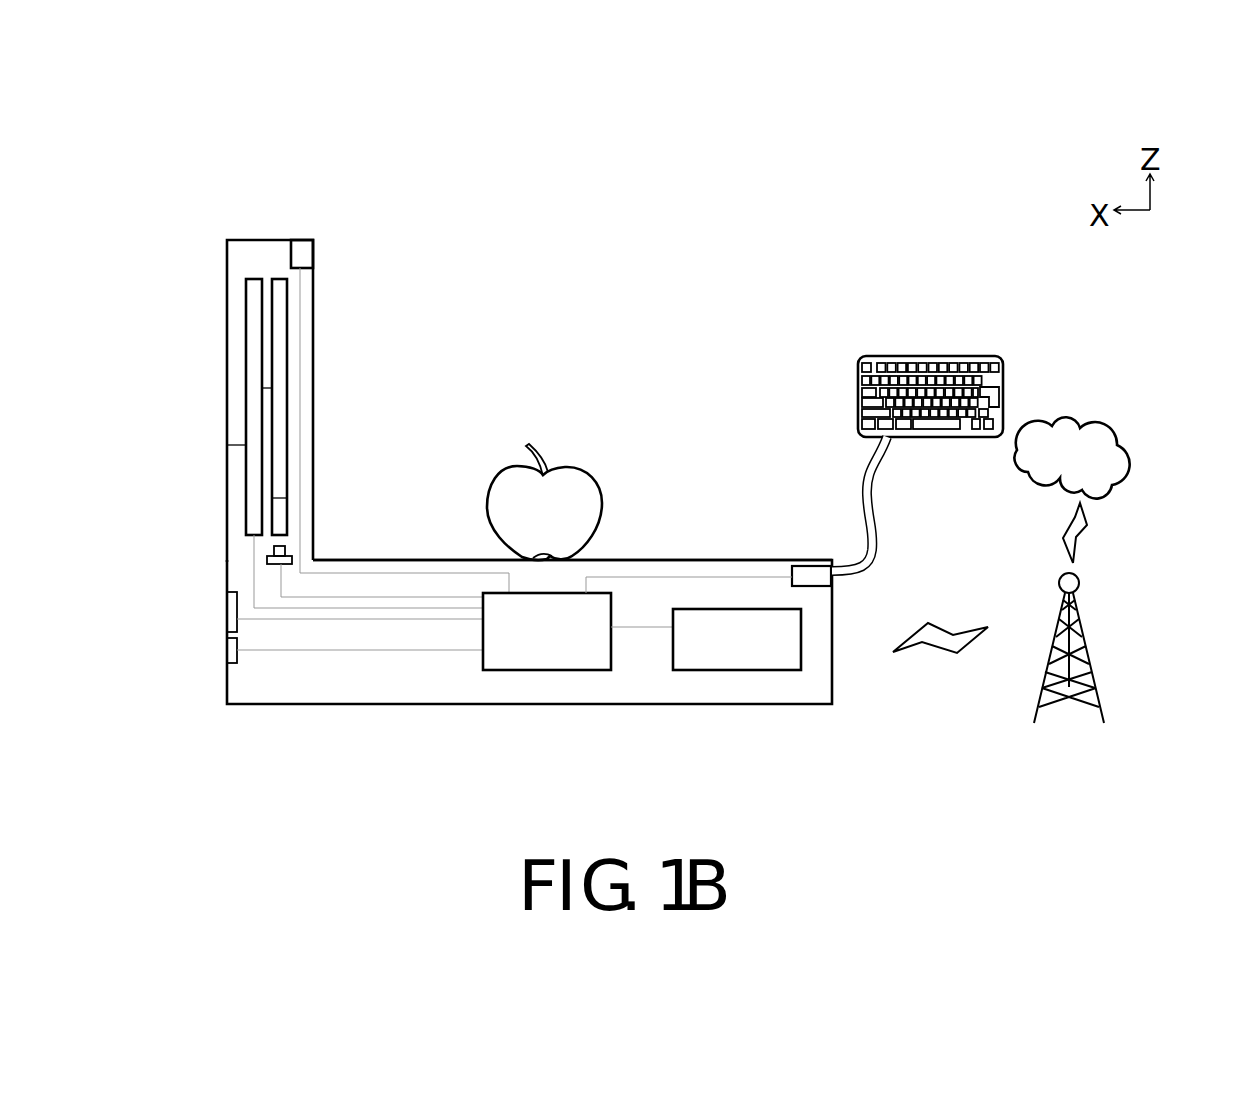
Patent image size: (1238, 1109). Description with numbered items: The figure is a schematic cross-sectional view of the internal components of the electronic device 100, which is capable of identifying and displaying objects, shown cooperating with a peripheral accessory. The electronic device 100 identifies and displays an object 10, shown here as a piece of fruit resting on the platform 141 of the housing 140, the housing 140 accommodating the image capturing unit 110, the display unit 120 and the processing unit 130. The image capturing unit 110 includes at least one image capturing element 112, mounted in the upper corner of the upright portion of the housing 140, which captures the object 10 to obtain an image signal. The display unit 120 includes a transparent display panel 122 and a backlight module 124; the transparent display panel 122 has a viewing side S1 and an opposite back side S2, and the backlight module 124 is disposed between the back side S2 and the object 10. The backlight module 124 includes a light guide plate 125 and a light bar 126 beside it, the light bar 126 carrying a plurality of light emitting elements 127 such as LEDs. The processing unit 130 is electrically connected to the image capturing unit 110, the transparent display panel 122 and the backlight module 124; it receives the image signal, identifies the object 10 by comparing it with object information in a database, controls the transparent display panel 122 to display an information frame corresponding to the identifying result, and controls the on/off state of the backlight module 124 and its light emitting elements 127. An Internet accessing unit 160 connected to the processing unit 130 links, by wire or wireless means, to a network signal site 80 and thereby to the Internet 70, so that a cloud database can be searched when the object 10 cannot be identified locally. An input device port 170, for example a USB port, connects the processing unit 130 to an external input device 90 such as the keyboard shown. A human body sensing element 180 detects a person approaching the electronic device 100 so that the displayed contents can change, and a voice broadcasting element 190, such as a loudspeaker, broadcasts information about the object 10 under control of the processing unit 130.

The electronic device 100 is at (992, 812).
The object 10 is at (578, 497).
The image capturing unit 110 is at (298, 250).
The image capturing element 112 is at (298, 250).
The display unit 120 is at (280, 193).
The transparent display panel 122 is at (252, 312).
The backlight module 124 is at (278, 270).
The light guide plate 125 is at (280, 500).
The light bar 126 is at (268, 572).
The light emitting elements 127 is at (272, 555).
The processing unit 130 is at (543, 672).
The housing 140 is at (675, 706).
The platform 141 is at (716, 556).
The Internet accessing unit 160 is at (758, 672).
The input device port 170 is at (808, 574).
The human body sensing element 180 is at (228, 655).
The voice broadcasting element 190 is at (228, 613).
The external input device 90 is at (925, 357).
The network signal site 80 is at (1100, 700).
The Internet 70 is at (1073, 438).
The viewing side S1 is at (240, 449).
The back side S2 is at (259, 392).